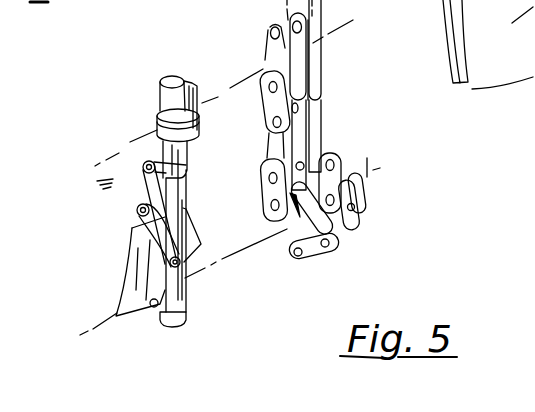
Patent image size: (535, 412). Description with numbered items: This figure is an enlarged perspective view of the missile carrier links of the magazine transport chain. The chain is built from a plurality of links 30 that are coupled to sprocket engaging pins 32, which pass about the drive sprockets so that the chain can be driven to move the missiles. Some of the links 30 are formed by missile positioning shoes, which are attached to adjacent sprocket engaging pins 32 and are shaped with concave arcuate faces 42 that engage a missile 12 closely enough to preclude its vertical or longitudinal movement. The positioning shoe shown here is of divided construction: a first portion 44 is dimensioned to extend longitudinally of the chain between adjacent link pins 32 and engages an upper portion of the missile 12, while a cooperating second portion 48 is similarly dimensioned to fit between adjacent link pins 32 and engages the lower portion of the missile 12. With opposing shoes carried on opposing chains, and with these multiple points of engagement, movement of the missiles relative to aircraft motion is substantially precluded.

The missile 12 is at (105, 178).
The link 30 is at (320, 261).
The sprocket engaging pin 32 is at (290, 72).
The concave arcuate face 42 is at (262, 192).
The first portion 44 is at (318, 98).
The second portion 48 is at (292, 255).